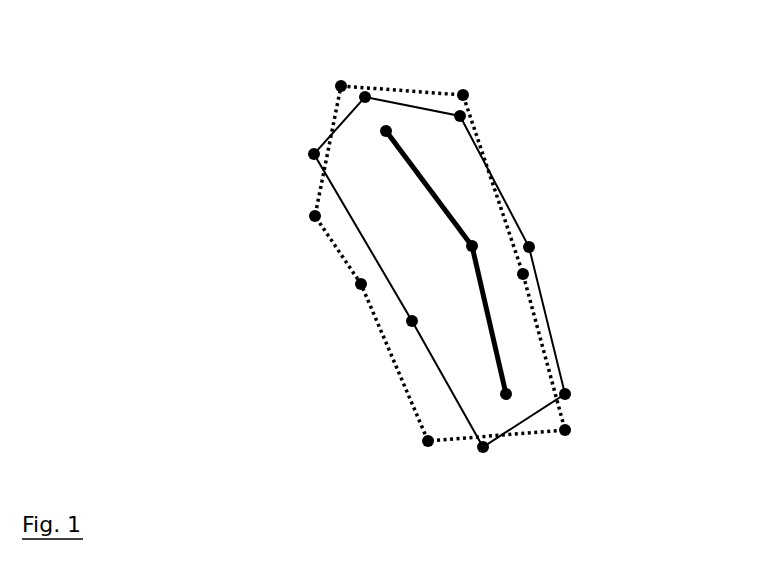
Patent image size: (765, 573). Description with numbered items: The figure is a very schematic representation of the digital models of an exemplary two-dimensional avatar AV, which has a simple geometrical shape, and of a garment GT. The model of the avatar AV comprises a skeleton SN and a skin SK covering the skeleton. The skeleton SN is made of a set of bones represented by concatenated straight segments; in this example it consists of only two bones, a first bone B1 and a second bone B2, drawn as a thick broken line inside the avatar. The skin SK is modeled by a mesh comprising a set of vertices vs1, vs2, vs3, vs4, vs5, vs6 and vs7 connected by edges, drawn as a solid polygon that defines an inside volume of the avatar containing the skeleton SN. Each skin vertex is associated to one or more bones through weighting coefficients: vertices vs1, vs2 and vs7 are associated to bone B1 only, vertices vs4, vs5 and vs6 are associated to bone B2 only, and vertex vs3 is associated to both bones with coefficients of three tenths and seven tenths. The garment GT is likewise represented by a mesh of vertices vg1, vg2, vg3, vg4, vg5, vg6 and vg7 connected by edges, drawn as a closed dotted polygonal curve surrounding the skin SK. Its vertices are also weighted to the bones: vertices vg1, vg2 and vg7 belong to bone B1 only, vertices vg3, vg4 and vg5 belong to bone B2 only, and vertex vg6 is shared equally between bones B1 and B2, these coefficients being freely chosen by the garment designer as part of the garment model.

The skin SK is at (548, 322).
The garment GT is at (331, 266).
The skeleton SN is at (448, 242).
The bone B1 is at (406, 162).
The bone B2 is at (487, 347).
The avatar AV is at (535, 193).
The vertex of the skin vs1 is at (365, 97).
The vertex of the skin vs2 is at (468, 111).
The vertex of the skin vs3 is at (529, 247).
The vertex of the skin vs4 is at (565, 394).
The vertex of the skin vs5 is at (483, 447).
The vertex of the skin vs6 is at (412, 321).
The vertex of the skin vs7 is at (313, 153).
The vertex of the garment vg1 is at (341, 86).
The vertex of the garment vg2 is at (463, 95).
The vertex of the garment vg3 is at (523, 274).
The vertex of the garment vg4 is at (565, 430).
The vertex of the garment vg5 is at (428, 440).
The vertex of the garment vg6 is at (361, 284).
The vertex of the garment vg7 is at (315, 216).